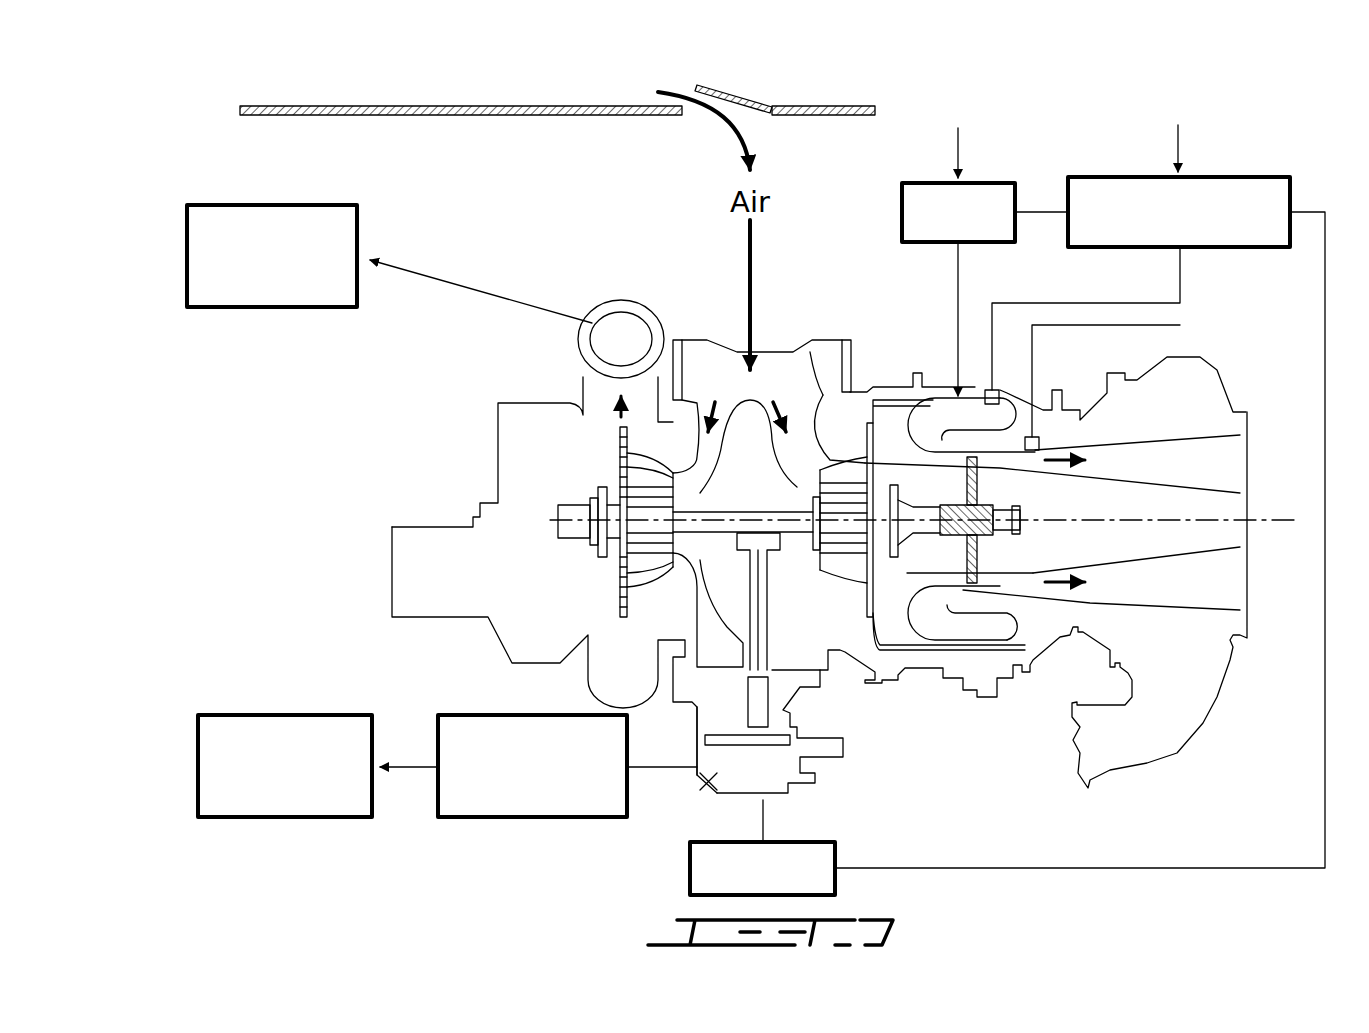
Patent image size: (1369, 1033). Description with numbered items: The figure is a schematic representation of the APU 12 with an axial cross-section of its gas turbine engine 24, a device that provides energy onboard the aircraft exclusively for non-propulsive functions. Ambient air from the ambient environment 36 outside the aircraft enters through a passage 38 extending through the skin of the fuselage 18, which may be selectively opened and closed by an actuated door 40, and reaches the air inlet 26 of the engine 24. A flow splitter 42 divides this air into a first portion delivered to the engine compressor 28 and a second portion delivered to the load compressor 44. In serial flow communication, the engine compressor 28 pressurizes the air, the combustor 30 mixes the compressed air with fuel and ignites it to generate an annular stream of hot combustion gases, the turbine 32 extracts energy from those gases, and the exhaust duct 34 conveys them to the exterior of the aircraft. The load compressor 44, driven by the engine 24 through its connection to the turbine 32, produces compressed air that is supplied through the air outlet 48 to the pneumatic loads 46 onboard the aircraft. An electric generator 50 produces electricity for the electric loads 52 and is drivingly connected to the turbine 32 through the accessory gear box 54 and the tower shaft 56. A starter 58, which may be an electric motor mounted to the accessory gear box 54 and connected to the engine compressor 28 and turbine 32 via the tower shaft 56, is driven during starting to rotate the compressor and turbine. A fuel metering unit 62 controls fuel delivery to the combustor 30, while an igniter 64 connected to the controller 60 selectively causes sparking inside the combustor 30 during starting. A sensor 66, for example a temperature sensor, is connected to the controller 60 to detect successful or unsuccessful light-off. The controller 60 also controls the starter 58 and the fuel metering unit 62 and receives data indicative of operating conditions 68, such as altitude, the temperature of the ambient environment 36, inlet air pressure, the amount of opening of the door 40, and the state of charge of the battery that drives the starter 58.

The APU 12 is at (462, 238).
The fuselage 18 is at (287, 108).
The gas turbine engine 24 is at (950, 790).
The air inlet 26 is at (782, 372).
The engine compressor 28 is at (843, 477).
The combustor 30 is at (945, 413).
The turbine 32 is at (962, 565).
The exhaust duct 34 is at (1152, 592).
The ambient environment 36 is at (567, 57).
The passage 38 is at (702, 110).
The actuated door 40 is at (737, 95).
The flow splitter 42 is at (740, 420).
The load compressor 44 is at (625, 477).
The pneumatic loads 46 is at (273, 203).
The air outlet 48 is at (622, 327).
The electric generator 50 is at (533, 818).
The electric loads 52 is at (285, 818).
The accessory gear box 54 is at (707, 780).
The tower shaft 56 is at (760, 648).
The starter 58 is at (803, 842).
The controller 60 is at (1243, 248).
The fuel metering unit 62 is at (902, 212).
The igniter 64 is at (1020, 395).
The sensor 66 is at (1040, 445).
The operating conditions 68 is at (1252, 82).